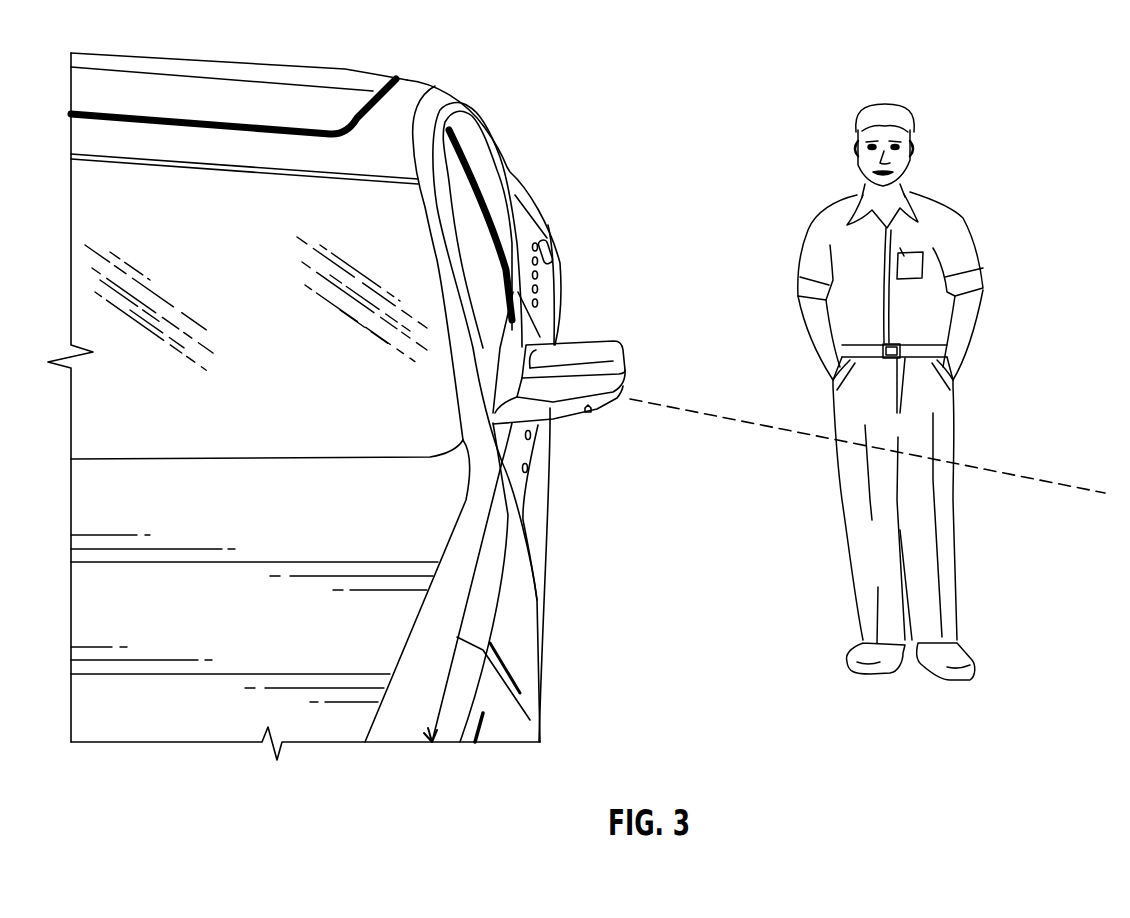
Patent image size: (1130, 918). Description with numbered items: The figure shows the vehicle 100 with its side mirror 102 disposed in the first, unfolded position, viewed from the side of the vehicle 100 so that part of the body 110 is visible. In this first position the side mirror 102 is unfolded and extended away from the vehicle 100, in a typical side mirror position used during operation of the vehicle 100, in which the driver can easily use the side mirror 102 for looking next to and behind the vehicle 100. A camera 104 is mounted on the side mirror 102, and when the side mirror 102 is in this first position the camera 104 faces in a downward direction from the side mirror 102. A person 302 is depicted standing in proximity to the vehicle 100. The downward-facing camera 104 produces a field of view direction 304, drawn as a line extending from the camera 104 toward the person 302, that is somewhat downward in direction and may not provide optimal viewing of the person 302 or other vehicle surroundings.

The vehicle 100 is at (410, 77).
The side mirror 102 is at (573, 355).
The camera 104 is at (588, 418).
The body 110 is at (512, 602).
The person 302 is at (930, 195).
The field of view direction 304 is at (750, 425).